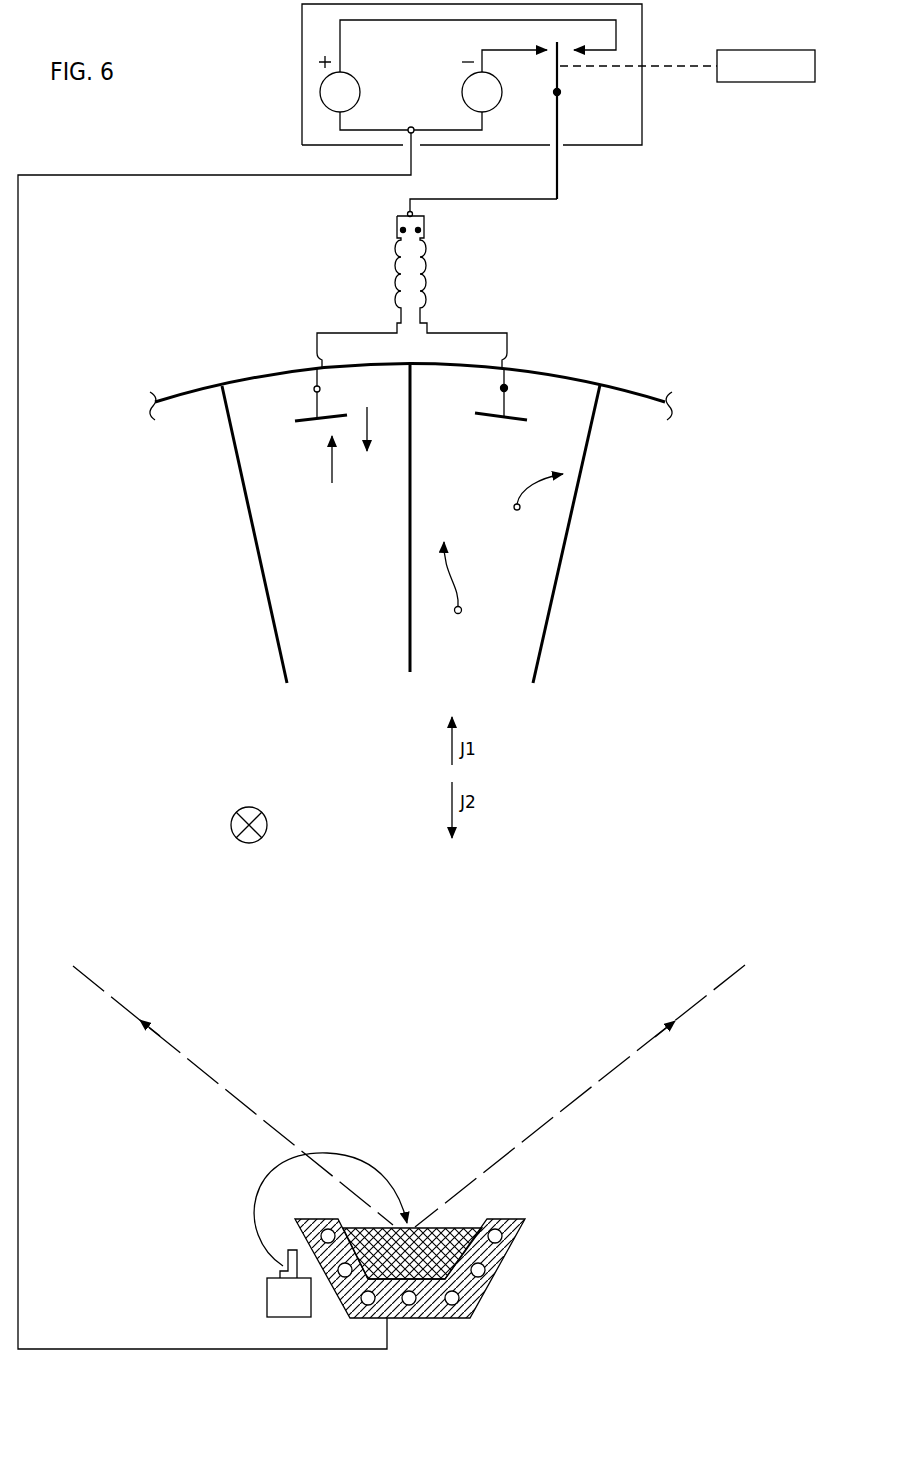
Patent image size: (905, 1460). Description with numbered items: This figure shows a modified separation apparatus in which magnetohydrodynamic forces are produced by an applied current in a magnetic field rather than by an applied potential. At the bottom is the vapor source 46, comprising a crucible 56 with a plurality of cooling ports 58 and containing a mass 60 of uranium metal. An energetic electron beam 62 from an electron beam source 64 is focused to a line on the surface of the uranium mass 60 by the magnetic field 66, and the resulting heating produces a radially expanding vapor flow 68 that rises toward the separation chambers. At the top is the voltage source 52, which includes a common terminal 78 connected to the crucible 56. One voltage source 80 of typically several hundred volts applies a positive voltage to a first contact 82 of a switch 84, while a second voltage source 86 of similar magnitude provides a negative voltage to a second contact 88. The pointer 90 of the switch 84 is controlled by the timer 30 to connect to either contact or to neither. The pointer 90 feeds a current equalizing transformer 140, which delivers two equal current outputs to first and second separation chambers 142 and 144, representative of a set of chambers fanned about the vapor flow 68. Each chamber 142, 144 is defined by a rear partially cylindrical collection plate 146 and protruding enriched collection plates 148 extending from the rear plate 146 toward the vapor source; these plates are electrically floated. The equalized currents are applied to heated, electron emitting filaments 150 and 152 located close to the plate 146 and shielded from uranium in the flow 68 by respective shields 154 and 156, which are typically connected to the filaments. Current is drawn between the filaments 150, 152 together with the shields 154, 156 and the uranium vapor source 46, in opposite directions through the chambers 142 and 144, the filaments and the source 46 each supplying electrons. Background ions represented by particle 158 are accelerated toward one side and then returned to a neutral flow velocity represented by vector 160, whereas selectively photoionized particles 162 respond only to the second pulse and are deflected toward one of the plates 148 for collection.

The timer 30 is at (745, 50).
The vapor source 46 is at (463, 1254).
The voltage source 52 is at (302, 42).
The crucible 56 is at (503, 1262).
The cooling ports 58 is at (456, 1298).
The mass of uranium metal 60 is at (432, 1236).
The electron beam 62 is at (352, 1157).
The electron beam source 64 is at (275, 1303).
The magnetic field 66 is at (268, 822).
The vapor flow 68 is at (632, 1058).
The common terminal 78 is at (412, 127).
The voltage source 80 is at (352, 77).
The first contact 82 is at (575, 48).
The switch 84 is at (562, 72).
The second voltage source 86 is at (497, 105).
The second contact 88 is at (545, 46).
The pointer 90 is at (560, 93).
The current equalizing transformer 140 is at (425, 282).
The first separation chamber 142 is at (540, 540).
The second separation chamber 144 is at (280, 540).
The rear partially cylindrical collection plate 146 is at (265, 377).
The enriched collection plates 148 is at (280, 665).
The first filament 150 is at (510, 390).
The second filament 152 is at (322, 389).
The shield 154 is at (488, 418).
The shield 156 is at (305, 424).
The particle 158 is at (463, 611).
The vector 160 is at (450, 565).
The particles 162 is at (513, 505).